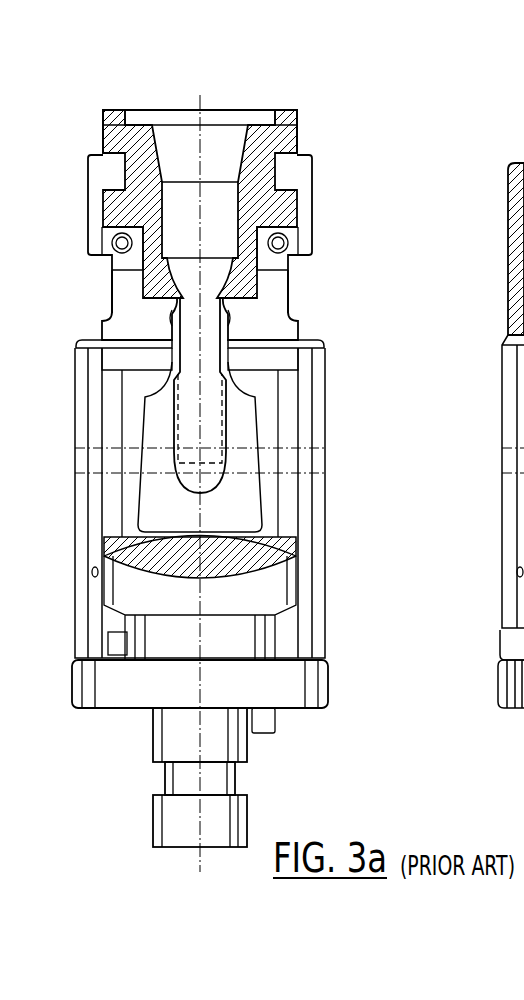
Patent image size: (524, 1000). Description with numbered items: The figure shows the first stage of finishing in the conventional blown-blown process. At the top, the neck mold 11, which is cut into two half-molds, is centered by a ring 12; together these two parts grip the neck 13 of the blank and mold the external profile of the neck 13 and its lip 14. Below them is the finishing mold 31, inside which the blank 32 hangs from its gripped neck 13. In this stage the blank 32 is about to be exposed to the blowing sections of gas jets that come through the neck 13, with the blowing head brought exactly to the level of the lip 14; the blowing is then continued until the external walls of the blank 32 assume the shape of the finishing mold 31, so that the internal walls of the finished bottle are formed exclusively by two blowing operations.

The neck mold 11 is at (273, 290).
The ring 12 is at (302, 138).
The neck 13 is at (262, 349).
The lip 14 is at (295, 312).
The finishing mold 31 is at (253, 510).
The blank 32 is at (226, 410).